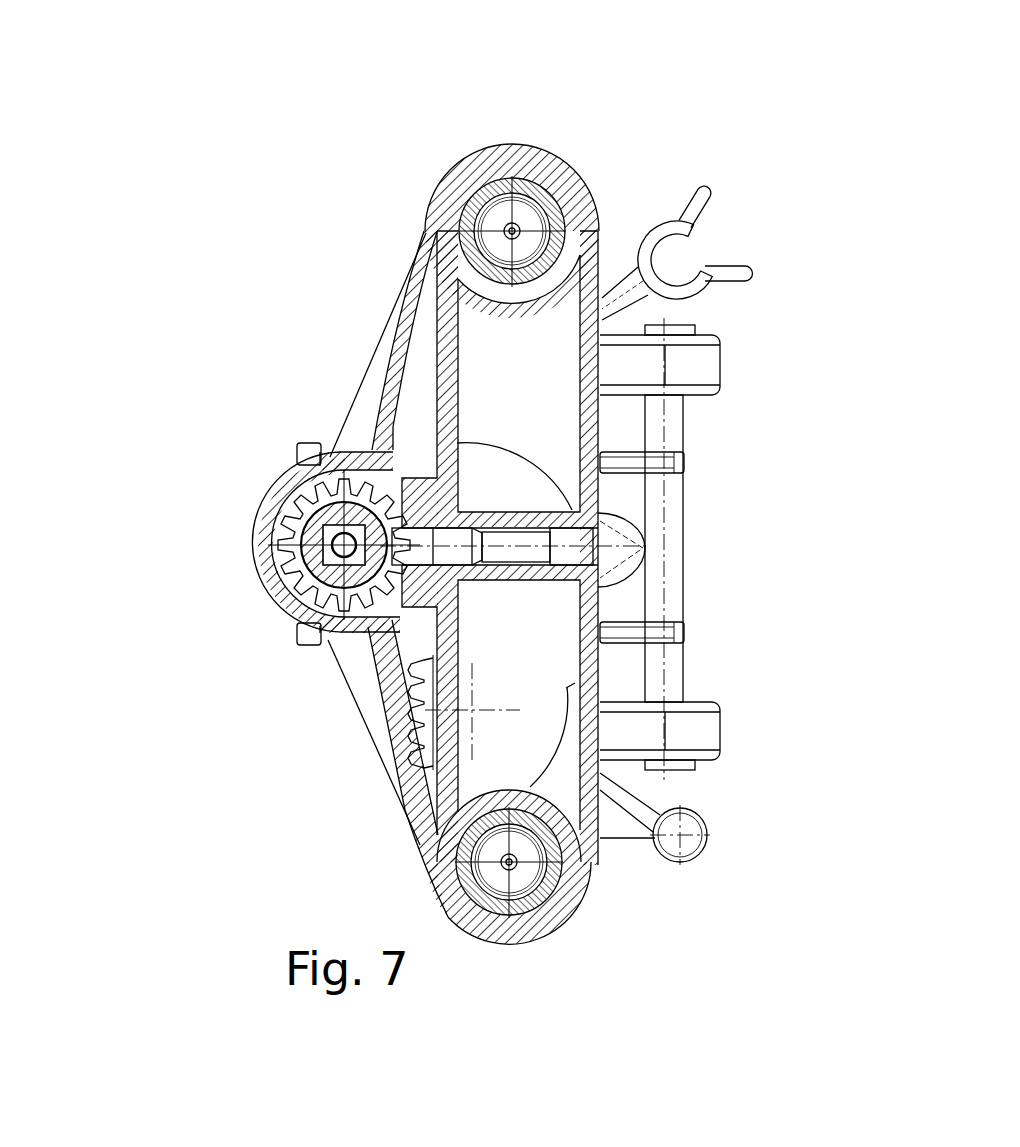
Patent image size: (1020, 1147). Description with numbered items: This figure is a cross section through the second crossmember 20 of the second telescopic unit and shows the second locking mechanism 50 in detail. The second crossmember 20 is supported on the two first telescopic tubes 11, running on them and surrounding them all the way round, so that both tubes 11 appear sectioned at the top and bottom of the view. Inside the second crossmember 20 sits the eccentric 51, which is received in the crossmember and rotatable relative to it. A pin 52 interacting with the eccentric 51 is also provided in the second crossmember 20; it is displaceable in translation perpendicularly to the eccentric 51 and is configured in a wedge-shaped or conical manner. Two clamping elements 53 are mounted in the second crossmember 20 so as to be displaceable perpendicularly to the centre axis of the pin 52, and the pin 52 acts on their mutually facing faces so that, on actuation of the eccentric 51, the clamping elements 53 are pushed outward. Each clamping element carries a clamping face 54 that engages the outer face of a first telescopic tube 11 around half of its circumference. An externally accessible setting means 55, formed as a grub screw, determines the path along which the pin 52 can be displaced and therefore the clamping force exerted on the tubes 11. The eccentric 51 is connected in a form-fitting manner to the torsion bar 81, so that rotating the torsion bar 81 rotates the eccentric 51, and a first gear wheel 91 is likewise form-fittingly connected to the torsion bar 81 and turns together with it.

The first telescopic tubes 11 is at (550, 190).
The second crossmember 20 is at (548, 925).
The second locking mechanism 50 is at (303, 385).
The eccentric 51 is at (340, 645).
The pin 52 is at (433, 527).
The clamping elements 53 is at (597, 400).
The clamping face 54 is at (610, 243).
The setting means 55 is at (527, 547).
The torsion bar 81 is at (330, 553).
The first gear wheel 91 is at (285, 483).